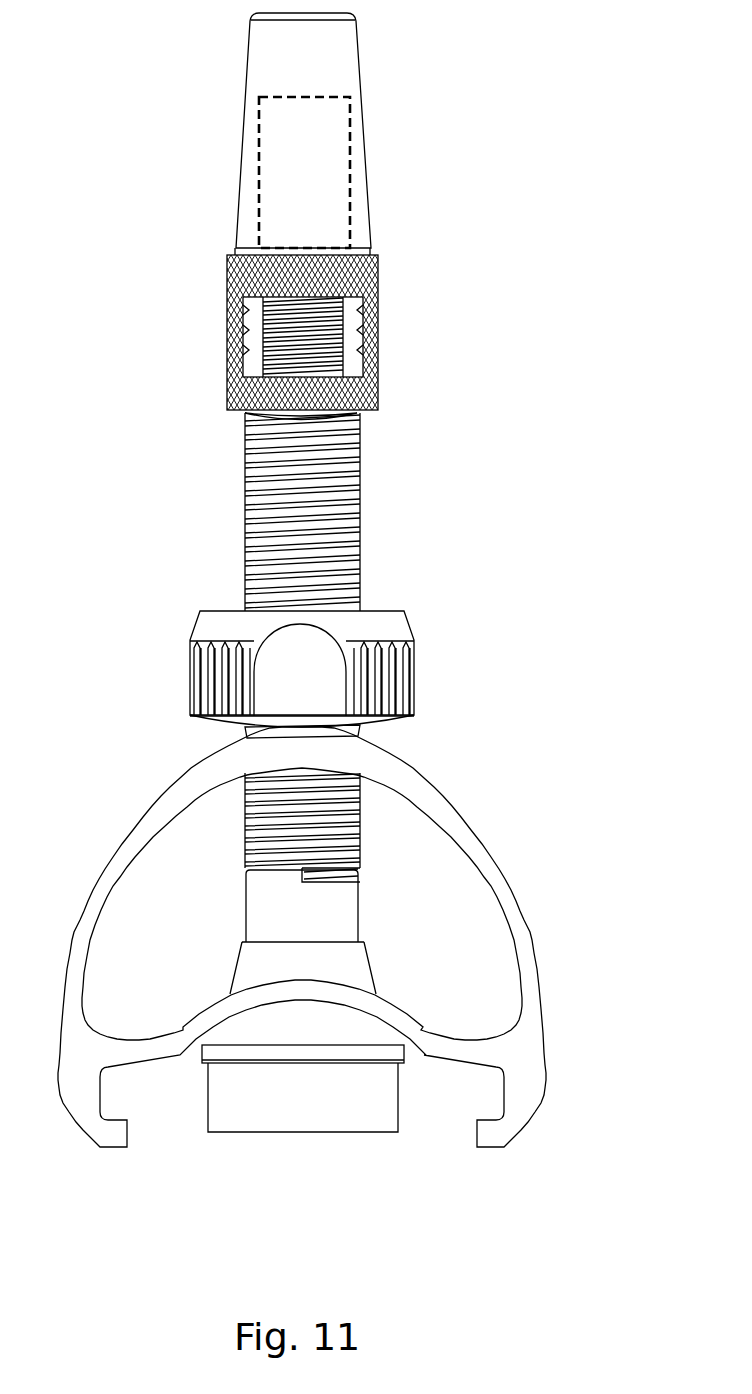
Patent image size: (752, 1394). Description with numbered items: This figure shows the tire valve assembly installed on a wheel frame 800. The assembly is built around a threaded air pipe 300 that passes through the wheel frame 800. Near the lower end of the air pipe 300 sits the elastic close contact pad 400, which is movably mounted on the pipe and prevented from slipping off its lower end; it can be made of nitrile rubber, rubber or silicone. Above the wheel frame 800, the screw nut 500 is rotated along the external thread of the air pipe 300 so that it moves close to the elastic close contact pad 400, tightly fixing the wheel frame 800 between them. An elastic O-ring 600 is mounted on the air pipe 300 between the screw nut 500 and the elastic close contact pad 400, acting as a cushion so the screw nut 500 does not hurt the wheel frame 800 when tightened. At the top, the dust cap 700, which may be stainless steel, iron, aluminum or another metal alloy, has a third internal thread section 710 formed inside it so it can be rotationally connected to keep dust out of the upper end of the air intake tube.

The air pipe 300 is at (357, 540).
The elastic close contact pad 400 is at (375, 967).
The screw nut 500 is at (417, 655).
The elastic O-ring 600 is at (235, 720).
The dust cap 700 is at (370, 223).
The third internal thread section 710 is at (350, 157).
The wheel frame 800 is at (448, 803).